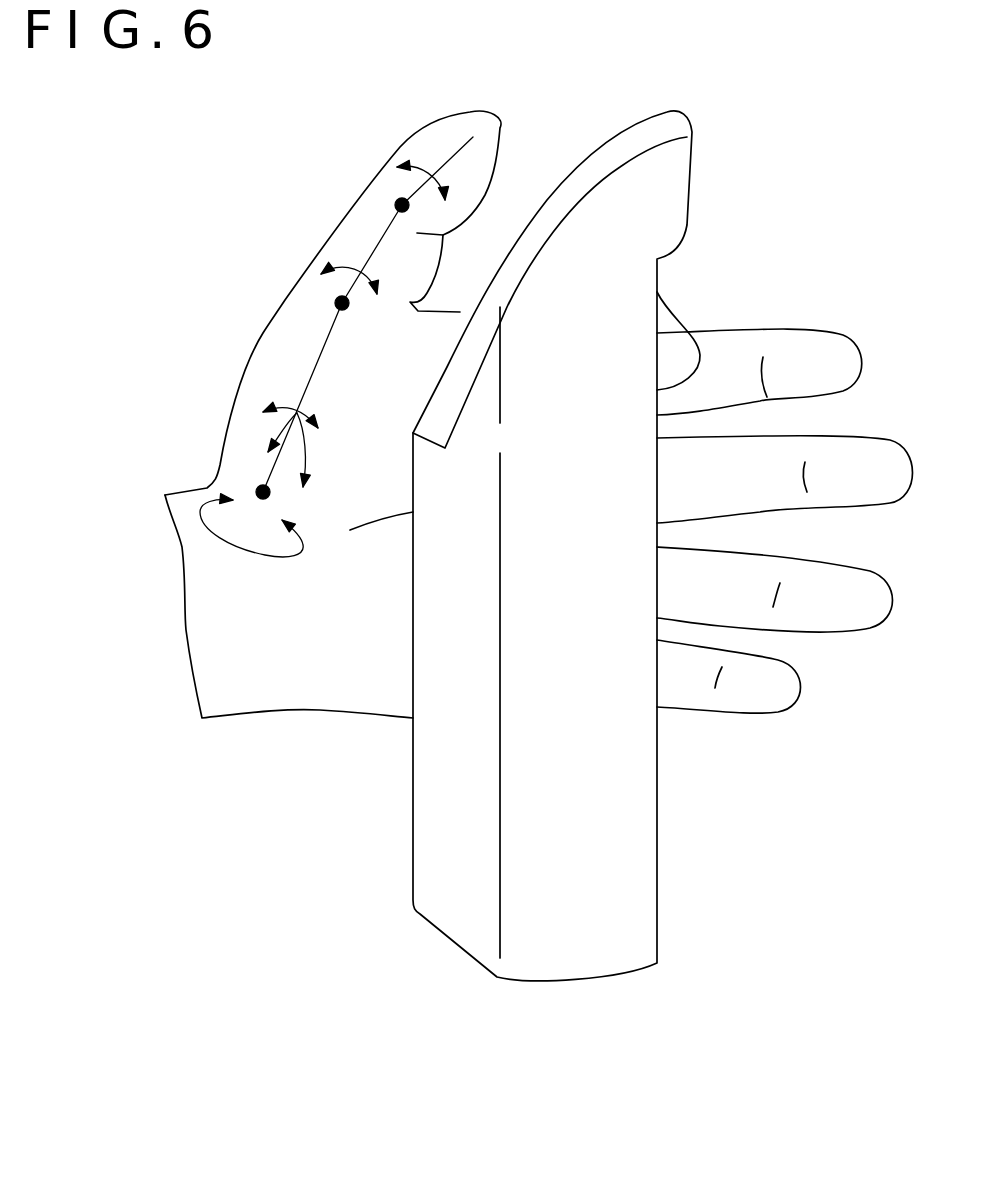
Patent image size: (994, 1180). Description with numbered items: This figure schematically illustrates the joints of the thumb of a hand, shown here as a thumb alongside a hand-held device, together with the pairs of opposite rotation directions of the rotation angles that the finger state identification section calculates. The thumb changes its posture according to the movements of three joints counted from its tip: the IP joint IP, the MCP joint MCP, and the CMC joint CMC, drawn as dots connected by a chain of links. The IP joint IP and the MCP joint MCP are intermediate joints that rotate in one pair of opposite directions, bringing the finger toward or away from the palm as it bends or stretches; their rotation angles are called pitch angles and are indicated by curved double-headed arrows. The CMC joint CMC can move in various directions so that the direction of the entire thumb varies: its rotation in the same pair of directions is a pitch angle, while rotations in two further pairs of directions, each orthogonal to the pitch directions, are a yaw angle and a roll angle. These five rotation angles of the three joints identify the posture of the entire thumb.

The IP joint IP is at (395, 204).
The MCP joint MCP is at (335, 306).
The CMC joint CMC is at (255, 490).